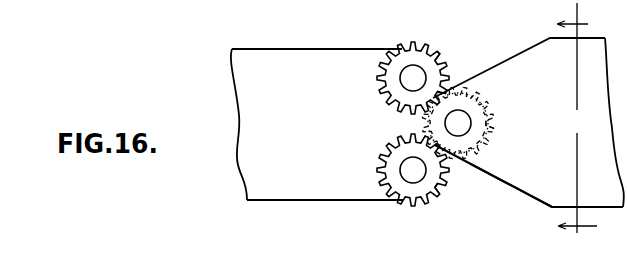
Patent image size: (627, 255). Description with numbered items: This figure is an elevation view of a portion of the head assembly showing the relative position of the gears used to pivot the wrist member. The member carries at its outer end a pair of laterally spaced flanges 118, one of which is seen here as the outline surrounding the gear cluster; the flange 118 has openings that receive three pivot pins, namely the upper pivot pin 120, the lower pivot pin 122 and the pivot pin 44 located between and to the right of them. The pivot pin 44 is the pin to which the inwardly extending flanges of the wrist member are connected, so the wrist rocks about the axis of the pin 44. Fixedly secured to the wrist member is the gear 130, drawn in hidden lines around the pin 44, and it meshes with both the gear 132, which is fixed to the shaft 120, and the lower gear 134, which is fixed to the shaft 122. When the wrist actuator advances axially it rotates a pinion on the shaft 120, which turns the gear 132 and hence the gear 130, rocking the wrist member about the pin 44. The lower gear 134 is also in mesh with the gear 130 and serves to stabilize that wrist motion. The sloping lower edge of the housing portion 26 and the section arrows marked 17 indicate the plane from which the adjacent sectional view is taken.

The flange 118 is at (338, 58).
The pivot pin 120 is at (413, 72).
The pivot pin 122 is at (410, 180).
The pivot pin 44 is at (467, 120).
The gear 132 is at (431, 47).
The lower gear 134 is at (444, 207).
The gear 130 is at (503, 142).
The housing wall 26 is at (513, 180).
The section line 17- 17 is at (577, 128).